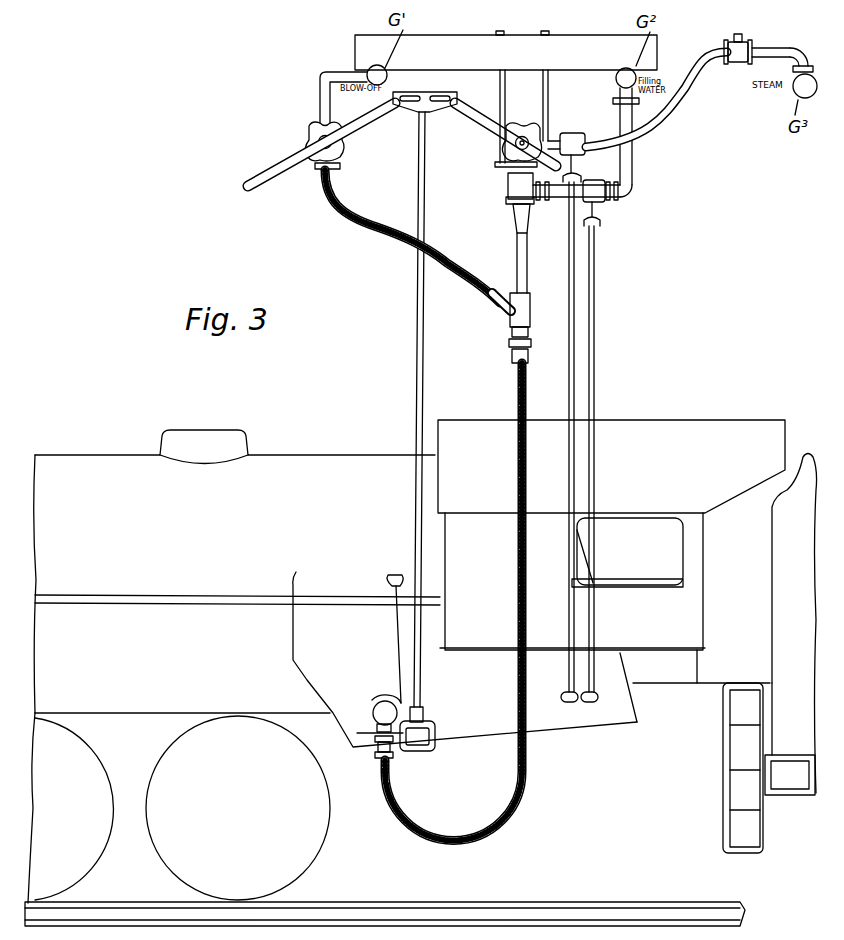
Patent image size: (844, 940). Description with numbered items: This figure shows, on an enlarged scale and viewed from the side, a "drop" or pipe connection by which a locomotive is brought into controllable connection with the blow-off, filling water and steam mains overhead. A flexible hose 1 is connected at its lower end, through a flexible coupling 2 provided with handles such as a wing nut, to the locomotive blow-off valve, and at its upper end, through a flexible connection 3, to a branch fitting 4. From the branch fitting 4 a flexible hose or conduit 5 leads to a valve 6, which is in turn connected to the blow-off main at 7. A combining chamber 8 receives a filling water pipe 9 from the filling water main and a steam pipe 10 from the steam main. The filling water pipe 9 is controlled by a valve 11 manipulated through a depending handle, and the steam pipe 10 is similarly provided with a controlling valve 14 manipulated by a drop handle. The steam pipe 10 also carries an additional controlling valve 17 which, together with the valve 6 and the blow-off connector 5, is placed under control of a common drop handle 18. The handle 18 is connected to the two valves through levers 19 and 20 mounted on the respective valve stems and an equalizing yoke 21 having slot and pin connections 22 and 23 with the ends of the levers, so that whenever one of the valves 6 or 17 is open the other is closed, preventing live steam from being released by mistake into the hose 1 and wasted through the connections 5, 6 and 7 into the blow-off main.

The flexible hose 1 is at (527, 470).
The flexible coupling 2 is at (375, 750).
The flexible connection 3 is at (528, 345).
The branch fitting 4 is at (530, 312).
The flexible hose or conduit 5 is at (390, 237).
The valve 6 is at (338, 165).
The blow-off main connection 7 is at (367, 77).
The combining chamber 8 is at (513, 236).
The filling water pipe 9 is at (633, 160).
The steam pipe 10 is at (676, 116).
The valve 11 is at (581, 180).
The controlling valve 14 is at (575, 133).
The additional controlling valve 17 is at (520, 126).
The common drop handle 18 is at (422, 692).
The lever 19 is at (372, 125).
The lever 20 is at (472, 120).
The equalizing yoke 21 is at (418, 112).
The slot and pin connection 22 is at (409, 97).
The slot and pin connection 23 is at (449, 98).